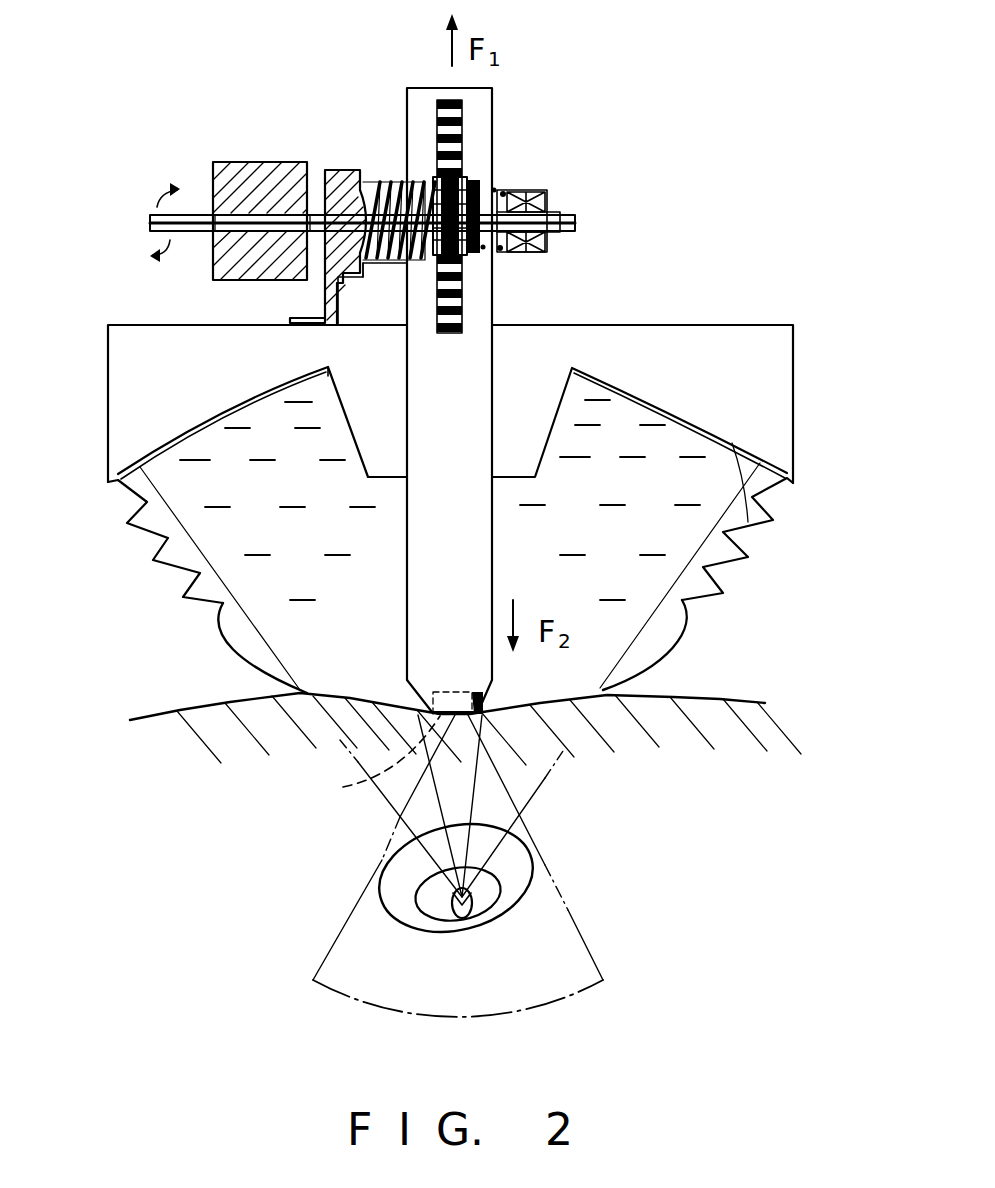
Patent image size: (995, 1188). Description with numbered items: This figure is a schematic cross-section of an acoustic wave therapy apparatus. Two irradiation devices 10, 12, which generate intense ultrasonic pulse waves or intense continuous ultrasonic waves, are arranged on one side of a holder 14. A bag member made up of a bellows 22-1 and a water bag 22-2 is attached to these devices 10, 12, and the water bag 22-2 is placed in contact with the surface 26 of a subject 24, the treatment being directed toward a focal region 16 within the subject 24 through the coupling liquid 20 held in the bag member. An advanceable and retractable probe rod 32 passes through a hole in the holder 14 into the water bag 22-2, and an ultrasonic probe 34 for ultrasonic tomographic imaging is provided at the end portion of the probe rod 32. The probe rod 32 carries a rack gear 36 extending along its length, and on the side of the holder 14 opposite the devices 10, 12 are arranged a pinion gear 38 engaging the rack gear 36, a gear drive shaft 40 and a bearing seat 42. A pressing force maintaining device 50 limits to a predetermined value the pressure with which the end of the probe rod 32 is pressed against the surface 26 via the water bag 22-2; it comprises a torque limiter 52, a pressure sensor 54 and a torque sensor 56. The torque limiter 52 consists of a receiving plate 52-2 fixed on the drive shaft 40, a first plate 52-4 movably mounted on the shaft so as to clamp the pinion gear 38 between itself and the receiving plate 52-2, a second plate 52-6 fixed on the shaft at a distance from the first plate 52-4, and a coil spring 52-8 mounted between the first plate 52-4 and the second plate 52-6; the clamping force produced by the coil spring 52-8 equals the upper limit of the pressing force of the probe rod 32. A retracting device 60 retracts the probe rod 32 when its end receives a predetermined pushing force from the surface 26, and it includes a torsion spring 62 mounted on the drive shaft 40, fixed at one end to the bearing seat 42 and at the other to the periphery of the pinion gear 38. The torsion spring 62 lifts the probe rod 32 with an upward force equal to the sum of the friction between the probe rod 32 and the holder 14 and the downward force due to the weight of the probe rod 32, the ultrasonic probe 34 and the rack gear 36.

The irradiation device 10 is at (748, 524).
The irradiation device 12 is at (207, 427).
The holder 14 is at (740, 325).
The focal region (target tissue) 16 is at (450, 900).
The acoustic coupling liquid chamber 20 is at (280, 623).
The bellows 22-1 is at (764, 500).
The water bag 22-2 is at (687, 628).
The subject 24 is at (728, 682).
The surface 26 is at (755, 695).
The probe rod 32 is at (452, 395).
The ultrasonic probe 34 is at (348, 787).
The rack gear 36 is at (440, 110).
The pinion gear 38 is at (463, 265).
The gear drive shaft 40 is at (150, 220).
The bearing seat 42 is at (336, 175).
The pressing force maintaining device 50 is at (538, 92).
The torque limiter 52 is at (520, 184).
The receiving plate 52-2 is at (463, 177).
The first plate 52-4 is at (483, 190).
The second plate 52-6 is at (525, 190).
The coil spring 52-8 is at (500, 250).
The pressure sensor 54 is at (487, 710).
The torque sensor 56 is at (250, 175).
The retracting device 60 is at (380, 100).
The torsion spring 62 is at (386, 185).